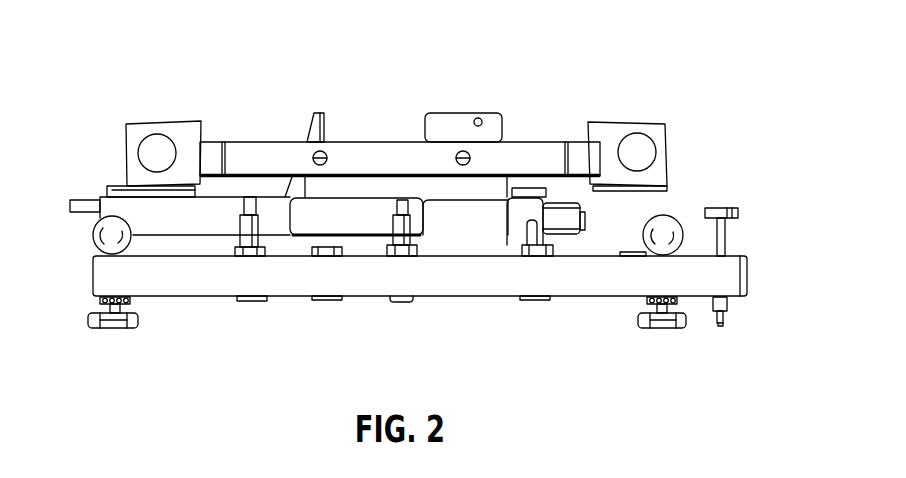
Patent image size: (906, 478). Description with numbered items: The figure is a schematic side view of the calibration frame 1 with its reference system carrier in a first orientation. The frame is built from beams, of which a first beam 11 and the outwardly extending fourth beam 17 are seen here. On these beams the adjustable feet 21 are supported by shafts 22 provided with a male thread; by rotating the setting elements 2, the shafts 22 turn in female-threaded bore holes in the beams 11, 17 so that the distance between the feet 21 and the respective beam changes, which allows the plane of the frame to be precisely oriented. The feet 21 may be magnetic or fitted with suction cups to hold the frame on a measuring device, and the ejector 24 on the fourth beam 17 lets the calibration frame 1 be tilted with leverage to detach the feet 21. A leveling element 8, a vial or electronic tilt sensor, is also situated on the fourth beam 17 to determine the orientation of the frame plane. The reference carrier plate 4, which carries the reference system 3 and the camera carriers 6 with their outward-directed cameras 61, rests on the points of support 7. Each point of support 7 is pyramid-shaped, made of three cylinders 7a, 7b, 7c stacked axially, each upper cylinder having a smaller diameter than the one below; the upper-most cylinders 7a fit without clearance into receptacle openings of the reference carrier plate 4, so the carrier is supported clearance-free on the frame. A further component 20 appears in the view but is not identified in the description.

The calibration frame 1 is at (734, 70).
The setting element 2 is at (110, 235).
The reference system 3 is at (336, 216).
The reference carrier plate 4 is at (135, 211).
The camera carrier 6 is at (534, 158).
The camera 61 is at (155, 152).
The point of support 7 is at (401, 268).
The upper-most cylinder 7a is at (242, 205).
The middle cylinder 7b is at (252, 231).
The lower cylinder 7c is at (247, 252).
The leveling element 8 is at (632, 252).
The first beam 11 is at (495, 276).
The fourth beam 17 is at (719, 276).
The guide block 20 is at (333, 256).
The foot 21 is at (112, 323).
The shaft 22 is at (129, 304).
The ejector 24 is at (739, 213).